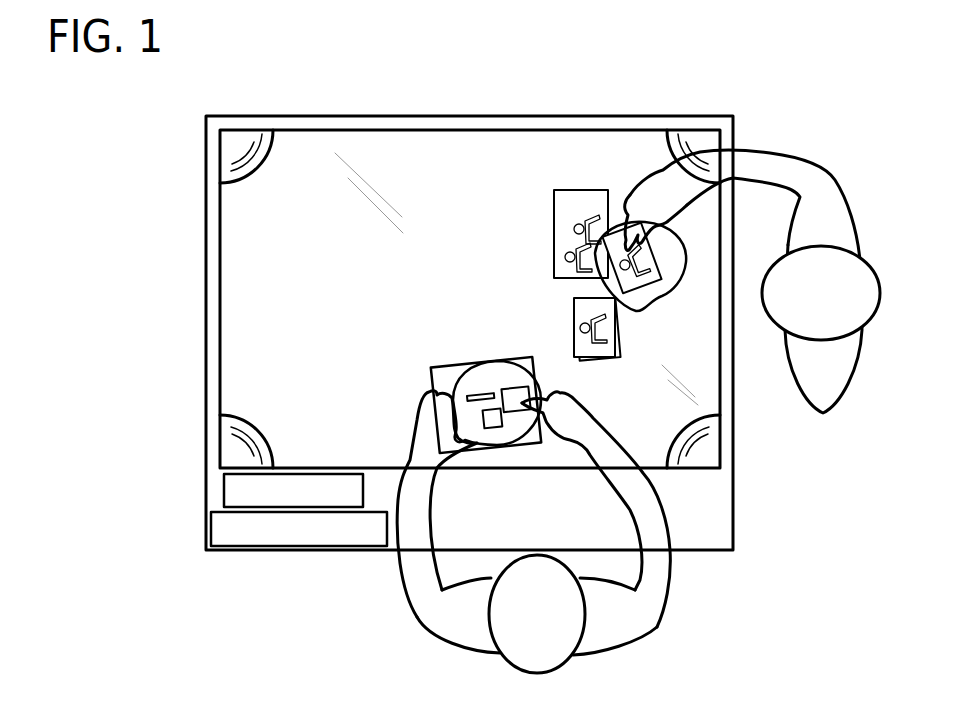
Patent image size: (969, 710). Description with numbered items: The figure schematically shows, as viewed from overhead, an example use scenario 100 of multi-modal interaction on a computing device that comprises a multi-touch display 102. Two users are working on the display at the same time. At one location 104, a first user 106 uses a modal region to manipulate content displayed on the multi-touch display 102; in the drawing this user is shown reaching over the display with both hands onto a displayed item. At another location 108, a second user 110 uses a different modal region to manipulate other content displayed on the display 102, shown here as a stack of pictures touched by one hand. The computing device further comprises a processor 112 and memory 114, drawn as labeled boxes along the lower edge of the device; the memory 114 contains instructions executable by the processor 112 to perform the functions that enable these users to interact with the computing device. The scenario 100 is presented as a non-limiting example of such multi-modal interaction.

The example use scenario 100 is at (460, 85).
The multi-touch display 102 is at (287, 115).
The first user interaction location 104 is at (420, 330).
The first user 106 is at (635, 628).
The second user interaction location 108 is at (552, 298).
The second user 110 is at (835, 376).
The processor 112 is at (355, 500).
The memory 114 is at (377, 538).